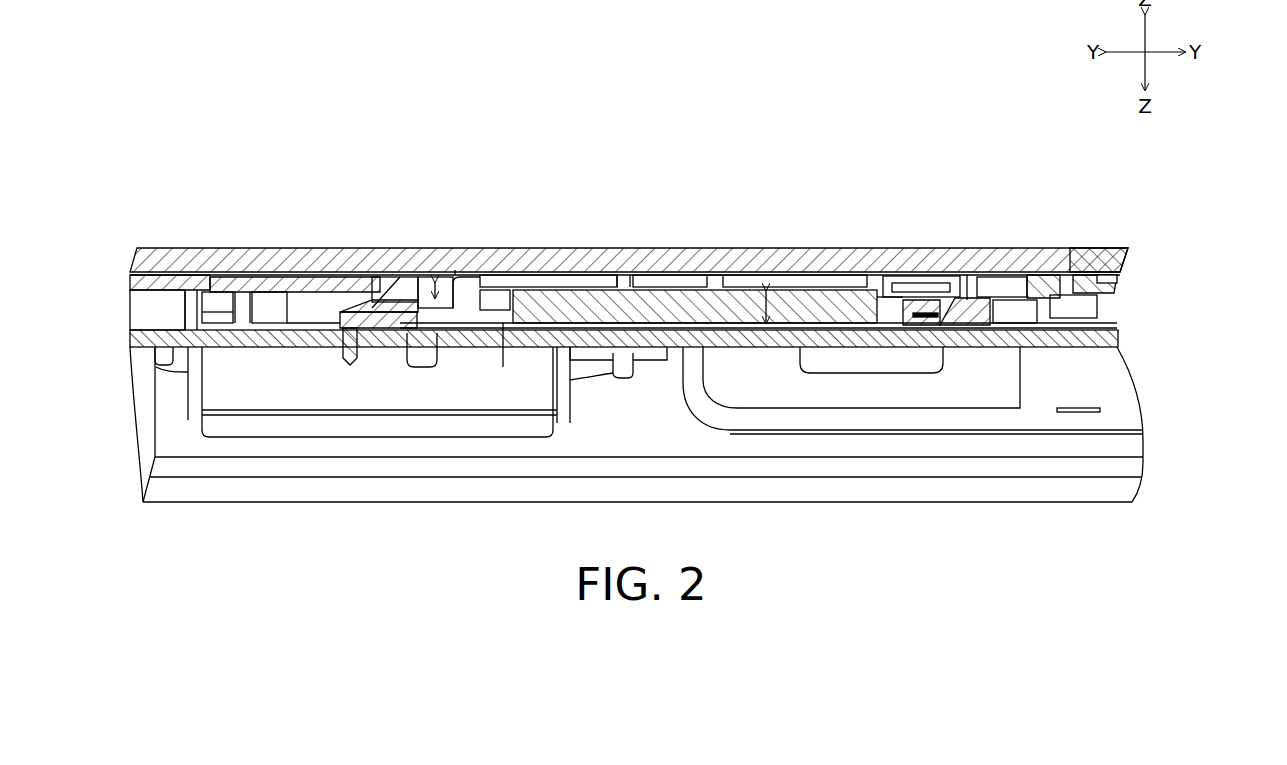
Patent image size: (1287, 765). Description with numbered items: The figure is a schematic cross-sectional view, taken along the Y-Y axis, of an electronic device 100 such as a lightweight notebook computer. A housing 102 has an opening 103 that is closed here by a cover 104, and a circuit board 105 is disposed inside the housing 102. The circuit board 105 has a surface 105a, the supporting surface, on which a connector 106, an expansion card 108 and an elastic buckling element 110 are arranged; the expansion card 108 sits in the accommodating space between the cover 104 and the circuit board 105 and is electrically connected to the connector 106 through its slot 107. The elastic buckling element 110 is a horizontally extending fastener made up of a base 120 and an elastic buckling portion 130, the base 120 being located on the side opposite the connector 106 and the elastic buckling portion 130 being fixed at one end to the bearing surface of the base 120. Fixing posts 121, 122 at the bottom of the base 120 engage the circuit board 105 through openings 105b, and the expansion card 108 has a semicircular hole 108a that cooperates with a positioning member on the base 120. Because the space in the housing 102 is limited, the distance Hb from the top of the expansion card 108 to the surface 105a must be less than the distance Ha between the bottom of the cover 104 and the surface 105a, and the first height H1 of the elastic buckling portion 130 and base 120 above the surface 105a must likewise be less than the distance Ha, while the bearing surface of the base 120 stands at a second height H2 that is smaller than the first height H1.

The electronic device 100 is at (1197, 183).
The housing 102 is at (1118, 249).
The opening 103 is at (1072, 250).
The cover 104 is at (1026, 250).
The circuit board 105 is at (1110, 340).
The surface 105a is at (1097, 323).
The openings 105b is at (292, 347).
The connector 106 is at (963, 312).
The slot 107 is at (923, 323).
The expansion card 108 is at (718, 318).
The semicircular hole 108a is at (495, 290).
The elastic buckling element 110 is at (388, 200).
The base 120 is at (352, 312).
The fixing post 121 is at (345, 365).
The fixing post 122 is at (423, 352).
The elastic buckling portion 130 is at (385, 280).
The first height H1 is at (441, 272).
The second height H2 is at (510, 323).
The distance Ha is at (672, 323).
The distance Hb is at (770, 295).